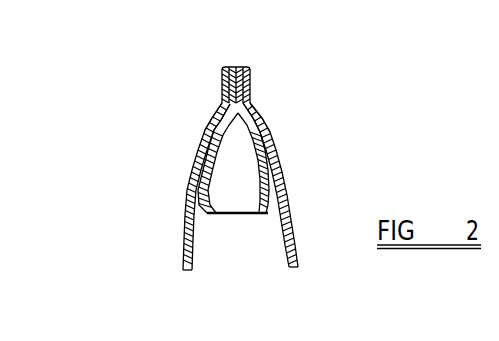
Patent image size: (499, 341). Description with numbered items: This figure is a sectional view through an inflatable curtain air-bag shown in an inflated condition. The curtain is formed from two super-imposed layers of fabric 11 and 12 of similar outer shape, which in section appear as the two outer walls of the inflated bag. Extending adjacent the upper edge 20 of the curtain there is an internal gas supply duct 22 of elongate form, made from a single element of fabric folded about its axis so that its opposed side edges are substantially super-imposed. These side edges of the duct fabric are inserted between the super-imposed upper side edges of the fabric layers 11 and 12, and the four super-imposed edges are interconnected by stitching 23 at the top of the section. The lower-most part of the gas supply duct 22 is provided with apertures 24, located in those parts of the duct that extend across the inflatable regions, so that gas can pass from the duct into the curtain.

The layer of fabric 11 is at (186, 222).
The layer of fabric 12 is at (299, 233).
The upper edge 20 is at (235, 65).
The gas supply duct 22 is at (213, 213).
The stitching 23 is at (208, 100).
The apertures 24 is at (241, 214).